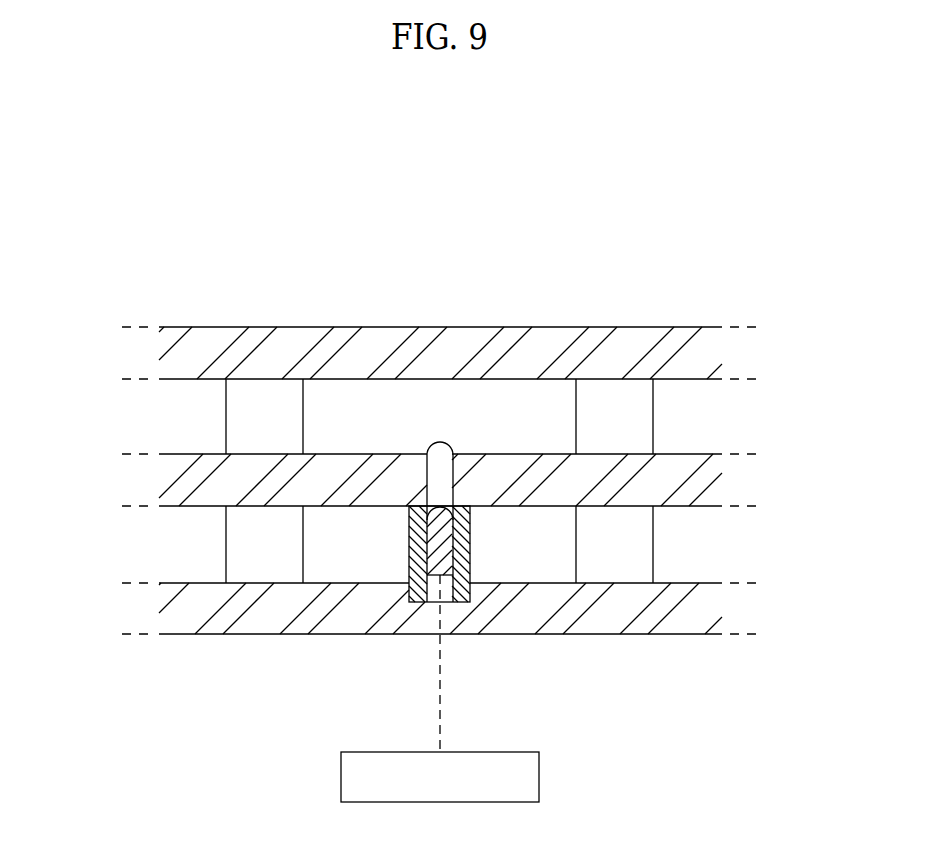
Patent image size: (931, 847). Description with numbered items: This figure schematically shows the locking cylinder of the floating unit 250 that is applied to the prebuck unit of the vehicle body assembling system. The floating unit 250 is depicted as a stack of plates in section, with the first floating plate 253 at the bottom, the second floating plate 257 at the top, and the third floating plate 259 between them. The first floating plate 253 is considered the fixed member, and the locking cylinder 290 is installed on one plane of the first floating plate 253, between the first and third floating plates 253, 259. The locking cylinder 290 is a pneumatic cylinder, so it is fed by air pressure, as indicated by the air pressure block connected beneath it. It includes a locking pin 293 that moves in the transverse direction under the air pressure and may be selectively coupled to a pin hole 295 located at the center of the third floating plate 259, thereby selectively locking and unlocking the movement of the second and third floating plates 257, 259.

The floating unit 250 is at (463, 234).
The second floating plate 257 is at (176, 379).
The third floating plate 259 is at (698, 506).
The first floating plate 253 is at (176, 633).
The pin hole 295 is at (438, 443).
The locking cylinder 290 is at (404, 541).
The locking pin 293 is at (444, 545).